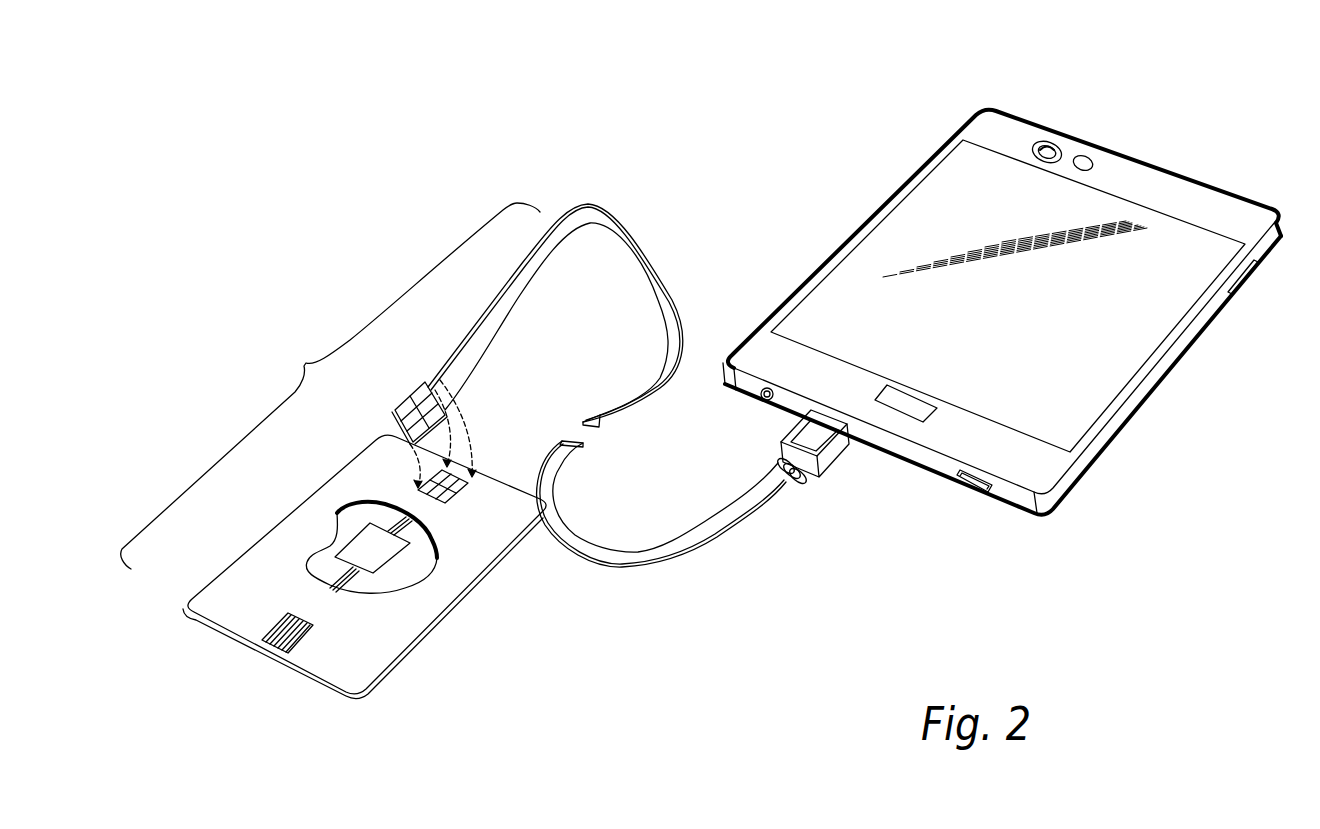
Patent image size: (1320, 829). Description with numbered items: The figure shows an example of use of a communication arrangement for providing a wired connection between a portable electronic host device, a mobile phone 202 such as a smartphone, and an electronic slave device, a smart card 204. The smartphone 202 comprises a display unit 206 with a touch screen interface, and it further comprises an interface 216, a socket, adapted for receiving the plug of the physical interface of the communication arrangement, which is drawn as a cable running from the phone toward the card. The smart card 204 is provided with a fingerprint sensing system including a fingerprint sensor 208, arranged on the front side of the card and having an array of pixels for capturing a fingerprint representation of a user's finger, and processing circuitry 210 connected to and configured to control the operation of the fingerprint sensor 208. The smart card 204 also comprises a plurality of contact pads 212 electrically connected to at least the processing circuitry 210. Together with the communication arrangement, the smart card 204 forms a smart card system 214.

The mobile phone 202 is at (1140, 400).
The smart card 204 is at (448, 619).
The display unit 206 is at (946, 184).
The fingerprint sensor 208 is at (300, 641).
The processing circuitry 210 is at (362, 533).
The contact pads 212 is at (462, 493).
The smart card system 214 is at (330, 386).
The interface 216 is at (830, 413).